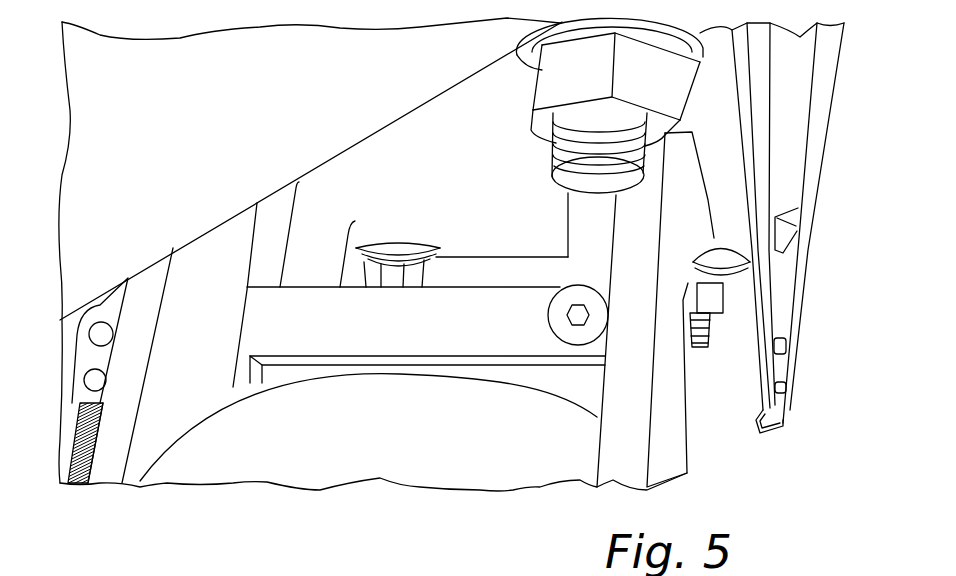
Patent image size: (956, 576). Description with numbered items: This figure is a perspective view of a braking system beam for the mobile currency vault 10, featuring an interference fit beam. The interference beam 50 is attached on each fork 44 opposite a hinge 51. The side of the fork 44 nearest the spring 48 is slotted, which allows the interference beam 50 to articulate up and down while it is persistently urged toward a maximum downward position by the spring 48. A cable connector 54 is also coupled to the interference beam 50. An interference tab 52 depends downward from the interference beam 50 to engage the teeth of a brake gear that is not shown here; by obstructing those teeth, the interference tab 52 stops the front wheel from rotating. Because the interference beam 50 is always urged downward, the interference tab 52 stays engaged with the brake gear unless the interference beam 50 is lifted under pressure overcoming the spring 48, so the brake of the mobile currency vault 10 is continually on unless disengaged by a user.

The mobile currency vault 10 is at (190, 102).
The fork 44 is at (108, 465).
The spring 48 is at (76, 484).
The interference beam 50 is at (449, 330).
The hinge 51 is at (573, 385).
The interference tab 52 is at (245, 385).
The cable connector 54 is at (101, 312).